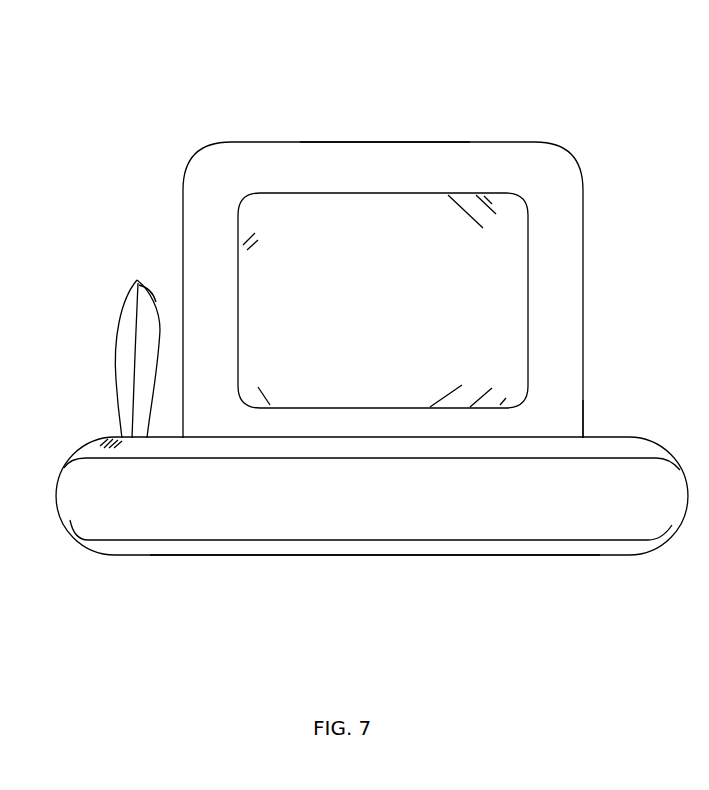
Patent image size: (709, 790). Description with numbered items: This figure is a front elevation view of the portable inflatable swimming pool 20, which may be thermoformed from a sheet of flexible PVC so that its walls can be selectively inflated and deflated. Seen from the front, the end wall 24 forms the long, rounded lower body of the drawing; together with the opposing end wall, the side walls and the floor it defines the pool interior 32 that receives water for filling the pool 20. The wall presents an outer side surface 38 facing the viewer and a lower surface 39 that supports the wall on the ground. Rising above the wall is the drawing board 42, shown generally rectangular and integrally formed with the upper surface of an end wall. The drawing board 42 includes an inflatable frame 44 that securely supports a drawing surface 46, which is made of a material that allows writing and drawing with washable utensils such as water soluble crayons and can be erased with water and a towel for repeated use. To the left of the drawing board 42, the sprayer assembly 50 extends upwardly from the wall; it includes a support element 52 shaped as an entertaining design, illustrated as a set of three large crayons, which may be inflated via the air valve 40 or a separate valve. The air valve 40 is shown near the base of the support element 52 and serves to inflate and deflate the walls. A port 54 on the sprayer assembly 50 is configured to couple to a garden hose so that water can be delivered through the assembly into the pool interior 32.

The portable inflatable swimming pool 20 is at (542, 78).
The end wall 24 is at (232, 510).
The pool interior 32 is at (591, 452).
The outer side surface 38 is at (375, 522).
The lower surface 39 is at (473, 552).
The air valve 40 is at (110, 440).
The drawing board 42 is at (247, 142).
The frame 44 is at (377, 178).
The drawing surface 46 is at (398, 296).
The sprayer assembly 50 is at (120, 292).
The support element 52 is at (148, 300).
The port 54 is at (113, 363).